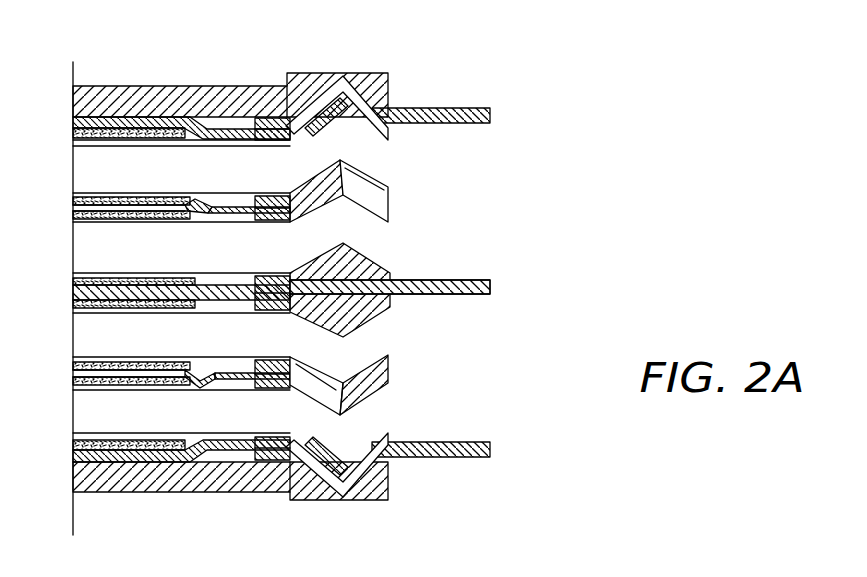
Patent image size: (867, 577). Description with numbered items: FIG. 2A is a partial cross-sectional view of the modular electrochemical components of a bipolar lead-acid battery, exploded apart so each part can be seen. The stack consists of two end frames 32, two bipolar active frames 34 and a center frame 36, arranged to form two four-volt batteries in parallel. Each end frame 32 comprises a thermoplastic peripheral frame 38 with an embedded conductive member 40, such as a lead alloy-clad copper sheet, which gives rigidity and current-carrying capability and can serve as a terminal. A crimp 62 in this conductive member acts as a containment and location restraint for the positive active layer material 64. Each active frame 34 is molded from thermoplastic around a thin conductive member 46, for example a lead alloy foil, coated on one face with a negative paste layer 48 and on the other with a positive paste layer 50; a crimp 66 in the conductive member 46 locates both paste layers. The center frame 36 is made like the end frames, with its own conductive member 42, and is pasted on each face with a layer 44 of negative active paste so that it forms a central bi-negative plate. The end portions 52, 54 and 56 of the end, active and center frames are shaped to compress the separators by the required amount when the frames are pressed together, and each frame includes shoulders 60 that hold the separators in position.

The end frame 32 is at (213, 78).
The thermoplastic peripheral frame 38 is at (310, 73).
The conductive member 40 is at (372, 107).
The crimp 62 is at (155, 128).
The positive active layer material 64 is at (93, 135).
The end portion 52 is at (370, 128).
The negative paste layer 48 is at (140, 200).
The positive paste layer 50 is at (144, 215).
The conductive member 46 is at (228, 207).
The crimp 66 is at (194, 214).
The shoulder 60 is at (284, 194).
The end portion 54 is at (352, 168).
The active frame 34 is at (412, 202).
The layer of negative active paste 44 is at (160, 282).
The end portion 56 is at (380, 258).
The conductive member 42 is at (372, 288).
The center frame 36 is at (412, 310).